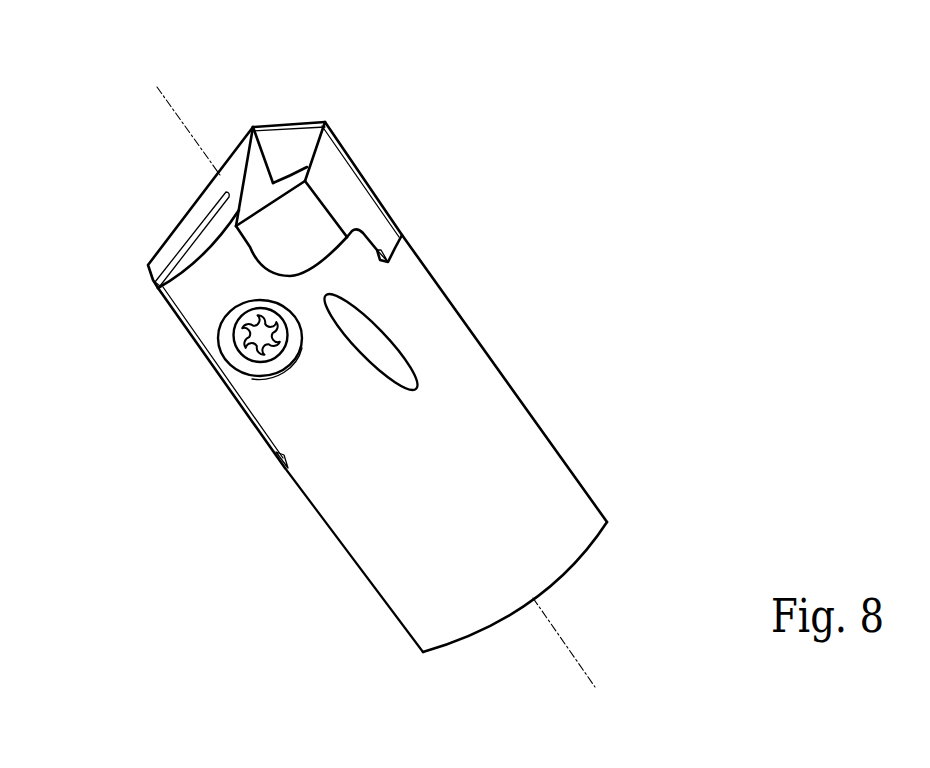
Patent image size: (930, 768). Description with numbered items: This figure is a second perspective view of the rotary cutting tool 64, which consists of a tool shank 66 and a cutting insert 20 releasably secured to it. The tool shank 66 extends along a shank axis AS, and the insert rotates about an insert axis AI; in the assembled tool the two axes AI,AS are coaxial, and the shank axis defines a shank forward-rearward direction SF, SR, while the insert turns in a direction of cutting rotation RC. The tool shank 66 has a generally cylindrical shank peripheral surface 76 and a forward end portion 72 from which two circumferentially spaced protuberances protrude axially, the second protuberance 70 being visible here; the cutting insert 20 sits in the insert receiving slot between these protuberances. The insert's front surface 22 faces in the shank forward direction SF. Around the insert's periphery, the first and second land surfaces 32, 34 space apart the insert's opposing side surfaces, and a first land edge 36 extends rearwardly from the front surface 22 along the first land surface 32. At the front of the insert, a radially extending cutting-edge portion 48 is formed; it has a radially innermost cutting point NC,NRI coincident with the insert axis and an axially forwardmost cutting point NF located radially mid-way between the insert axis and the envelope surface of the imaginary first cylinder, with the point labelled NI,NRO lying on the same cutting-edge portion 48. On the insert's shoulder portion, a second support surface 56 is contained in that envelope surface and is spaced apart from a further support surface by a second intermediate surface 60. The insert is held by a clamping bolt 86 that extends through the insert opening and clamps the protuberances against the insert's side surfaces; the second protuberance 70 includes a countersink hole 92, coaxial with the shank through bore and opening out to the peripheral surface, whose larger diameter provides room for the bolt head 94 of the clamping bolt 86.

The cutting insert 20 is at (318, 166).
The front surface 22 is at (278, 143).
The first land surface 32 is at (374, 178).
The second land surface 34 is at (167, 315).
The first land edge 36 is at (326, 158).
The cutting-edge portion 48 is at (227, 162).
The second support surface 56 is at (305, 246).
The second intermediate surface 60 is at (368, 219).
The rotary cutting tool 64 is at (464, 67).
The tool shank 66 is at (449, 361).
The second protuberance 70 is at (222, 290).
The forward end portion 72 is at (196, 261).
The shank peripheral surface 76 is at (479, 428).
The clamping bolt 86 is at (243, 337).
The countersink hole 92 is at (260, 377).
The bolt head 94 is at (260, 325).
The axially forwardmost cutting point NF is at (252, 125).
The insert axis and shank axis AI,AS is at (160, 118).
The radially innermost cutting point NC,NRI is at (218, 170).
The nose intersection / nose radius outer NI,NRO is at (324, 122).
The shank forward direction SF is at (545, 278).
The shank rearward direction SR is at (588, 340).
The direction of cutting rotation RC is at (547, 702).